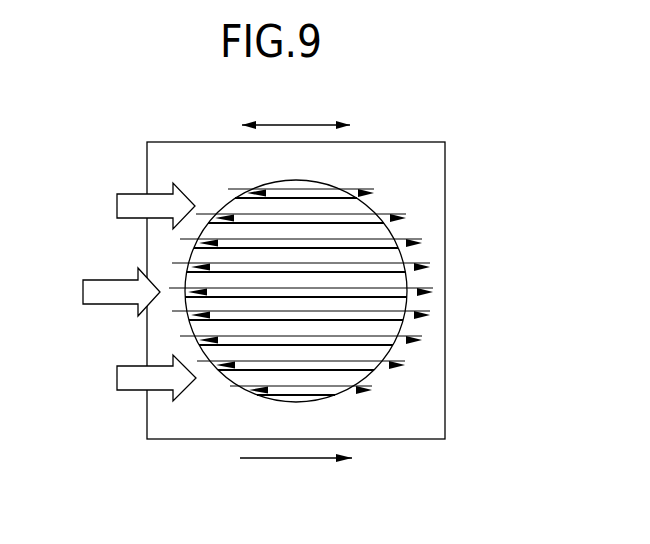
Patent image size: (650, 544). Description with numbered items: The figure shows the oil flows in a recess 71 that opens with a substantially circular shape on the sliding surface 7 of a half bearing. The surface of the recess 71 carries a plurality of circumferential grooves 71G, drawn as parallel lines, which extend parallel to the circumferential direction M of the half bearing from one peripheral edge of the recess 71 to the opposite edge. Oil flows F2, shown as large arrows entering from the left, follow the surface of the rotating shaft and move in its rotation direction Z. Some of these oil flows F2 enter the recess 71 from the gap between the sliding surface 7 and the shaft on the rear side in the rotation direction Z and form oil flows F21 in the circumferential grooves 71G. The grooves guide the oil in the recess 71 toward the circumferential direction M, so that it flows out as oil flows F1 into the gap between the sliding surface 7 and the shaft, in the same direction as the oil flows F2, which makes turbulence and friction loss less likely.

The sliding surface 7 is at (433, 182).
The recess 71 is at (318, 180).
The circumferential groove 71G is at (243, 247).
The oil flow out of the recess F1 is at (383, 366).
The oil flow in the circumferential groove F21 is at (210, 365).
The oil flow following the shaft surface F2 is at (128, 377).
The circumferential direction M is at (296, 112).
The rotation direction Z is at (296, 474).